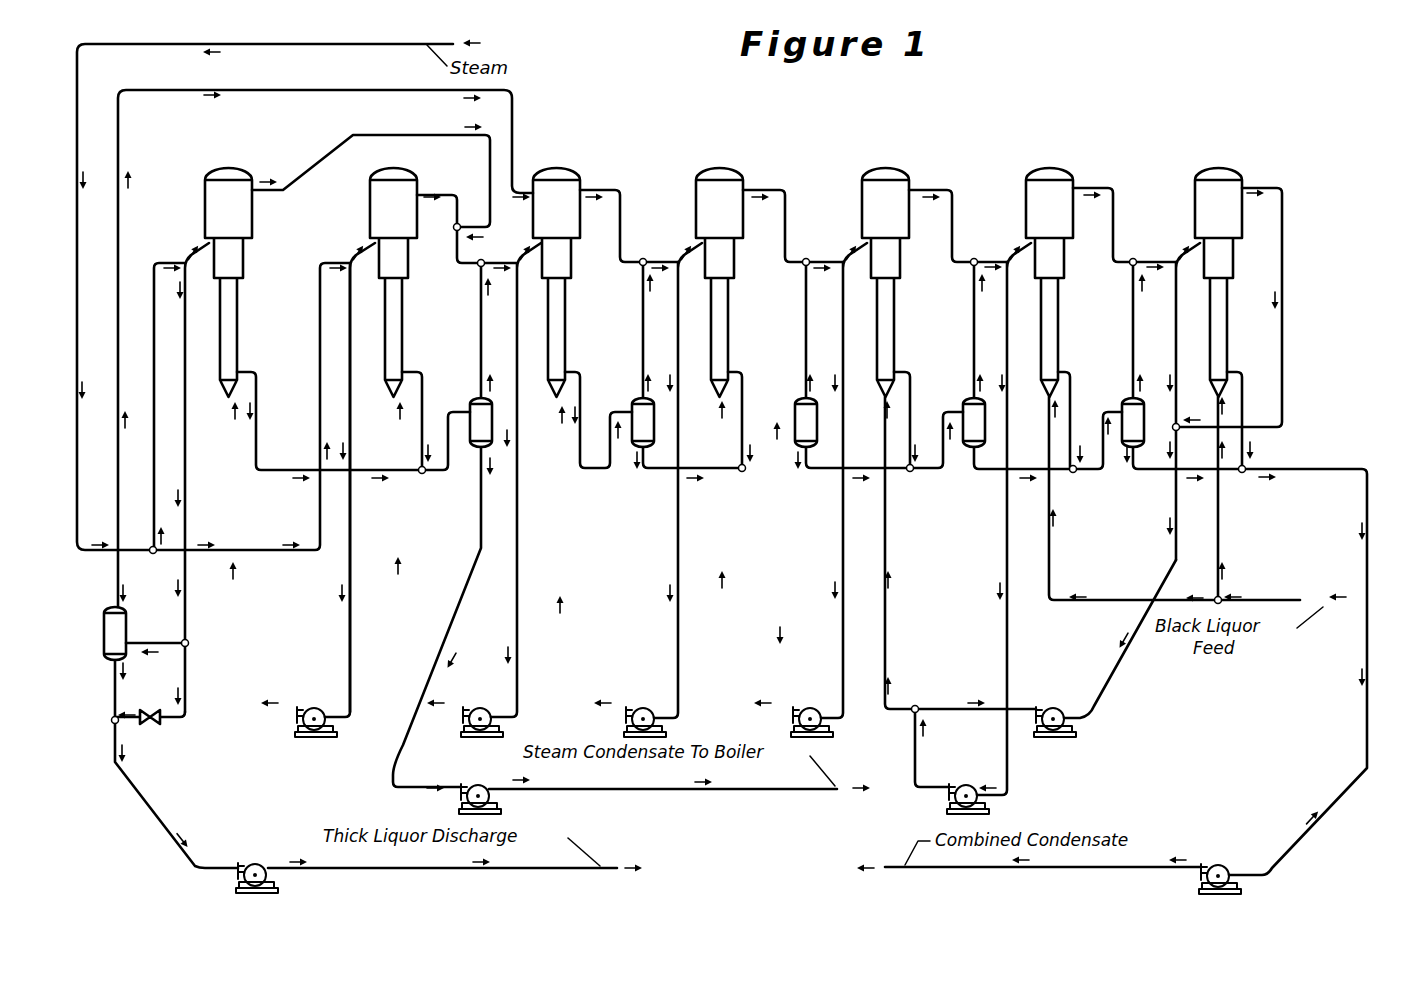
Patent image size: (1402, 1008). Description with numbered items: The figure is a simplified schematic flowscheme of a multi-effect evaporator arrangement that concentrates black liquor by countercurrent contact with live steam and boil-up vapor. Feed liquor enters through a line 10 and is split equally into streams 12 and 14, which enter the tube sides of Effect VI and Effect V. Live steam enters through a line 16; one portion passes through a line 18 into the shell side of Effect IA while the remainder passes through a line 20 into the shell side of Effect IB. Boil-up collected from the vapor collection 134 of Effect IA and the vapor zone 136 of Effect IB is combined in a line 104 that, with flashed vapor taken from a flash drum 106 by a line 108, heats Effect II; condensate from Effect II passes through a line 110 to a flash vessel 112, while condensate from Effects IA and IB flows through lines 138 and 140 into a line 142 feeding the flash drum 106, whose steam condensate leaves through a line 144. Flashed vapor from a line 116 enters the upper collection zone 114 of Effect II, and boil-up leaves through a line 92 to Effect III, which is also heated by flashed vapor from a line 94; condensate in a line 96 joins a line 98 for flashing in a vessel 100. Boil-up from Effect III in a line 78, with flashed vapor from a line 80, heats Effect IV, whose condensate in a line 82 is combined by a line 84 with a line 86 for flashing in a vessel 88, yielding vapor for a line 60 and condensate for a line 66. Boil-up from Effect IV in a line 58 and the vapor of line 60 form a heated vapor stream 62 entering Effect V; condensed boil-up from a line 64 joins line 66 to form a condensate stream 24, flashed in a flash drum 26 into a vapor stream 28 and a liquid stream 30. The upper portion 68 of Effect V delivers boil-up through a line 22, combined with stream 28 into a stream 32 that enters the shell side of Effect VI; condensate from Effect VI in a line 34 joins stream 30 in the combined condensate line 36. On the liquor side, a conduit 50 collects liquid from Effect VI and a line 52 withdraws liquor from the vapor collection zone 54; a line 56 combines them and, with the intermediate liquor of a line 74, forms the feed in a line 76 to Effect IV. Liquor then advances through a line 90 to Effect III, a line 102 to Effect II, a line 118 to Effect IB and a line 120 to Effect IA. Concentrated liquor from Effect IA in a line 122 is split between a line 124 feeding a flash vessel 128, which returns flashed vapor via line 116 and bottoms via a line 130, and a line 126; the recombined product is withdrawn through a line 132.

The line 10 is at (1260, 598).
The stream 12 is at (1218, 557).
The stream 14 is at (1052, 577).
The line 16 is at (323, 44).
The line 18 is at (154, 405).
The line 20 is at (345, 258).
The line 22 is at (1088, 185).
The condensate stream 24 is at (1102, 474).
The flash drum 26 is at (1124, 400).
The vapor stream 28 is at (1133, 333).
The liquid stream 30 is at (1157, 474).
The stream 32 is at (1162, 260).
The line 34 is at (1232, 377).
The line 36 is at (1052, 868).
The conduit 50 is at (1273, 185).
The line 52 is at (1176, 360).
The vapor collection zone 54 is at (1226, 167).
The line 56 is at (1173, 557).
The line 58 is at (938, 184).
The line 60 is at (972, 333).
The heated vapor stream 62 is at (995, 260).
The line 64 is at (1071, 373).
The line 66 is at (995, 474).
The upper portion of Effect V 68 is at (1051, 167).
The line 74 is at (1005, 580).
The line 76 is at (885, 637).
The line 78 is at (763, 186).
The line 80 is at (804, 333).
The line 82 is at (907, 372).
The line 84 is at (938, 474).
The line 86 is at (822, 474).
The vessel 88 is at (965, 400).
The line 90 is at (843, 573).
The line 92 is at (597, 186).
The line 94 is at (641, 333).
The line 96 is at (742, 372).
The line 98 is at (660, 474).
The vessel 100 is at (796, 398).
The line 102 is at (678, 573).
The line 104 is at (470, 267).
The vessel 106 is at (474, 399).
The line 108 is at (481, 323).
The line 110 is at (580, 372).
The flash vessel 112 is at (633, 398).
The upper collection zone 114 is at (553, 167).
The line 116 is at (124, 137).
The line 118 is at (512, 681).
The line 120 is at (347, 681).
The line 122 is at (203, 250).
The line 124 is at (150, 641).
The line 126 is at (150, 726).
The flash vessel 128 is at (125, 604).
The line 130 is at (118, 686).
The line 132 is at (166, 826).
The vapor collection 134 is at (230, 168).
The vapor zone 136 is at (395, 168).
The line 138 is at (256, 372).
The line 140 is at (410, 372).
The line 142 is at (432, 474).
The line 144 is at (477, 562).
The Effect IA is at (249, 267).
The Effect IB is at (384, 267).
The Effect II is at (556, 258).
The Effect III is at (696, 223).
The Effect IV is at (862, 224).
The Effect V is at (1027, 264).
The Effect VI is at (1194, 264).